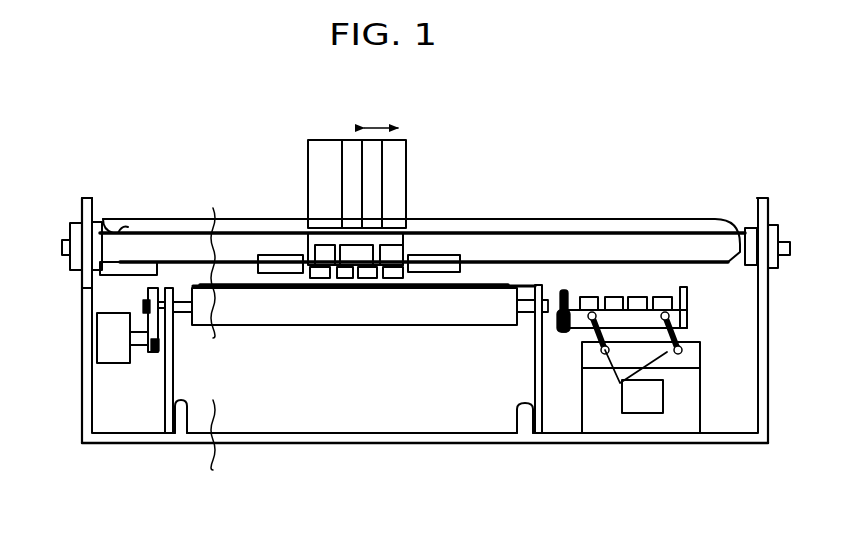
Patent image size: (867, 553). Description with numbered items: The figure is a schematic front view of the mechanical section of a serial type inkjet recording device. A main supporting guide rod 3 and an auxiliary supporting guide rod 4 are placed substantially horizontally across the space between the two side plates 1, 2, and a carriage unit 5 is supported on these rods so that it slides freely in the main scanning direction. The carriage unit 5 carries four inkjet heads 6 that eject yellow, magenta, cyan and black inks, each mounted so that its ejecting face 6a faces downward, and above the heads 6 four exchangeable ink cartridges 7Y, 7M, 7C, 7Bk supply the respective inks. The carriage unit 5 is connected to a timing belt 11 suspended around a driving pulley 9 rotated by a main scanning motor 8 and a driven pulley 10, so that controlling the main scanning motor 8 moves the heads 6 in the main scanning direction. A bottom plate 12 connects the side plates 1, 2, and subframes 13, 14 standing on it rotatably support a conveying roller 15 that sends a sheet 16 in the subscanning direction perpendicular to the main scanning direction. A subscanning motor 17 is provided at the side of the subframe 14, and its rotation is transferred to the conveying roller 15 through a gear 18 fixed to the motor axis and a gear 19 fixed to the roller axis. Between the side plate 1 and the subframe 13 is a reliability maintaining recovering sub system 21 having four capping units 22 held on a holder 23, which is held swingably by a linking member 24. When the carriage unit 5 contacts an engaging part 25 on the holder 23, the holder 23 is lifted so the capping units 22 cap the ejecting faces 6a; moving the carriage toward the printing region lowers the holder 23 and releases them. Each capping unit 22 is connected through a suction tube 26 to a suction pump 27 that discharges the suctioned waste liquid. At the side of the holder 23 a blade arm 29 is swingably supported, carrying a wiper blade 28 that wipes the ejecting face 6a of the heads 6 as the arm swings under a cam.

The side plate 1 is at (766, 388).
The side plate 2 is at (80, 410).
The main supporting guide rod 3 is at (487, 240).
The auxiliary supporting guide rod 4 is at (272, 258).
The carriage unit 5 is at (320, 250).
The inkjet head 6 is at (349, 280).
The ejecting face 6a is at (343, 280).
The black ink cartridge 7Bk is at (322, 150).
The cyan ink cartridge 7C is at (345, 150).
The magenta ink cartridge 7M is at (372, 157).
The yellow ink cartridge 7Y is at (393, 147).
The main scanning motor 8 is at (103, 222).
The driving pulley 9 is at (128, 227).
The driven pulley 10 is at (718, 220).
The timing belt 11 is at (450, 222).
The bottom plate 12 is at (713, 445).
The subframe 13 is at (522, 445).
The subframe 14 is at (182, 445).
The conveying roller 15 is at (377, 310).
The sheet 16 is at (440, 290).
The subscanning motor 17 is at (110, 340).
The gear 18 is at (155, 350).
The gear 19 is at (147, 302).
The sub system 21 is at (697, 323).
The capping unit 22 is at (632, 297).
The holder 23 is at (618, 315).
The linking member 24 is at (683, 332).
The engaging part 25 is at (683, 287).
The suction tube 26 is at (620, 383).
The suction pump 27 is at (638, 405).
The wiper blade 28 is at (562, 290).
The blade arm 29 is at (560, 300).